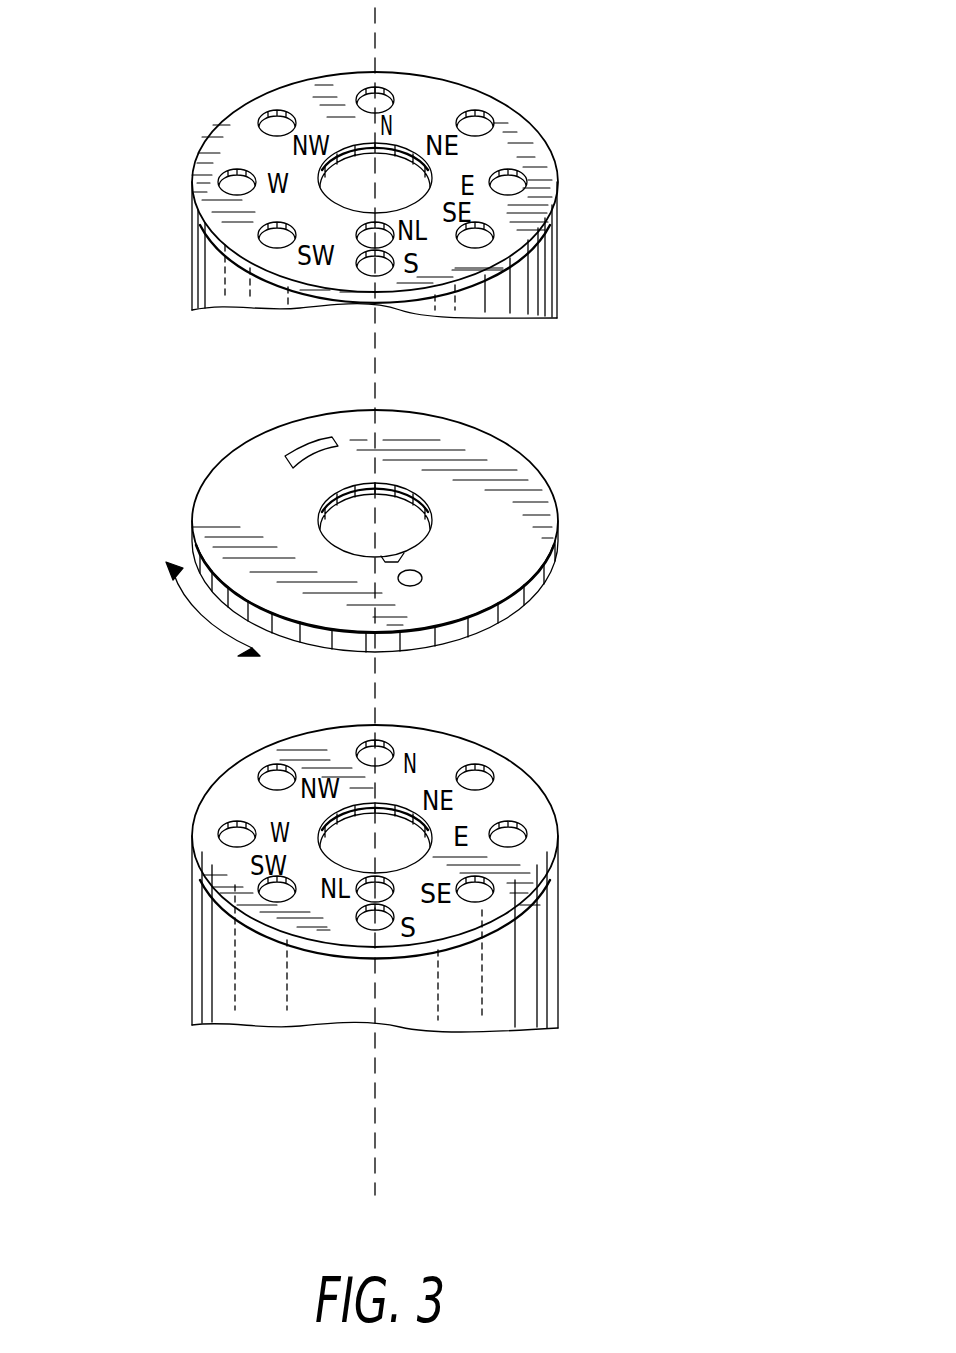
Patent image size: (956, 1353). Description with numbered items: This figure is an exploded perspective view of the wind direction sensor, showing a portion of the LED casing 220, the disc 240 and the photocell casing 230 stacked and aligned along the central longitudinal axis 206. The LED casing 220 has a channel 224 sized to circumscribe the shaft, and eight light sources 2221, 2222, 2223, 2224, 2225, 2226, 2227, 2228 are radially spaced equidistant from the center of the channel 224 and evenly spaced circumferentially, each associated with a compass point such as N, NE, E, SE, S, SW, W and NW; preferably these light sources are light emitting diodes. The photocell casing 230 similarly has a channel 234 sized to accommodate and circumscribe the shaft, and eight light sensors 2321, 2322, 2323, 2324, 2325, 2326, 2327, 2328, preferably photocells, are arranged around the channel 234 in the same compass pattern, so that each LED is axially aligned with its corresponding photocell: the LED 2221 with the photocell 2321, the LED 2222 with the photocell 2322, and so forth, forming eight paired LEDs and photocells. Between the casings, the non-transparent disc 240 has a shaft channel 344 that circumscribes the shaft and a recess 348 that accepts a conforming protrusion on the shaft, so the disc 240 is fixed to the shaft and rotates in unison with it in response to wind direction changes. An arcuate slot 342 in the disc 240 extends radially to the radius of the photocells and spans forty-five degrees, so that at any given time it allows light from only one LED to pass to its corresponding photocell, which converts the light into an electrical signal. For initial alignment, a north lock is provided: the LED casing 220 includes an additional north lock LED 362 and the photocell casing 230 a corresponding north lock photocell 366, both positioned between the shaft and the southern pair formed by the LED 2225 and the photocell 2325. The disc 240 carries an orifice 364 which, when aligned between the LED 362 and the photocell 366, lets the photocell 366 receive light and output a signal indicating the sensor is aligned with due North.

The central longitudinal axis 206 is at (377, 1122).
The LED casing 220 is at (562, 232).
The channel 224 is at (400, 173).
The light source 2221 is at (388, 95).
The light source 2222 is at (487, 117).
The light source 2223 is at (515, 185).
The light source 2224 is at (477, 243).
The light source 2225 is at (364, 266).
The light source 2226 is at (258, 237).
The light source 2227 is at (230, 187).
The light source 2228 is at (287, 112).
The north lock LED 362 is at (380, 240).
The disc 240 is at (557, 514).
The slot 342 is at (285, 458).
The shaft channel 344 is at (417, 533).
The recess 348 is at (393, 557).
The orifice 364 is at (417, 584).
The photocell casing 230 is at (520, 1032).
The channel 234 is at (327, 832).
The light sensor 2321 is at (357, 747).
The light sensor 2322 is at (478, 782).
The light sensor 2323 is at (518, 828).
The light sensor 2324 is at (490, 893).
The light sensor 2325 is at (370, 923).
The light sensor 2326 is at (262, 896).
The light sensor 2327 is at (213, 832).
The light sensor 2328 is at (267, 778).
The north lock photocell 366 is at (352, 892).